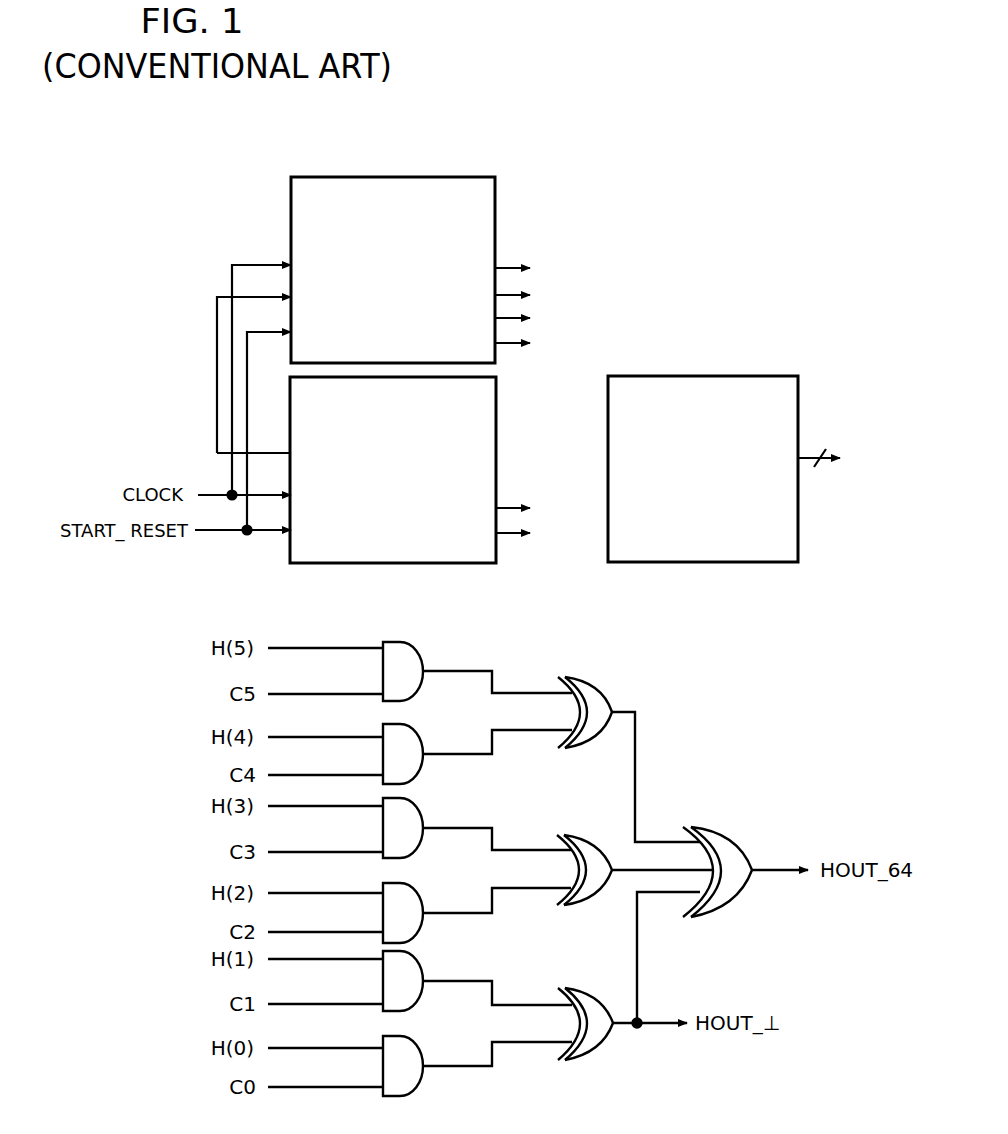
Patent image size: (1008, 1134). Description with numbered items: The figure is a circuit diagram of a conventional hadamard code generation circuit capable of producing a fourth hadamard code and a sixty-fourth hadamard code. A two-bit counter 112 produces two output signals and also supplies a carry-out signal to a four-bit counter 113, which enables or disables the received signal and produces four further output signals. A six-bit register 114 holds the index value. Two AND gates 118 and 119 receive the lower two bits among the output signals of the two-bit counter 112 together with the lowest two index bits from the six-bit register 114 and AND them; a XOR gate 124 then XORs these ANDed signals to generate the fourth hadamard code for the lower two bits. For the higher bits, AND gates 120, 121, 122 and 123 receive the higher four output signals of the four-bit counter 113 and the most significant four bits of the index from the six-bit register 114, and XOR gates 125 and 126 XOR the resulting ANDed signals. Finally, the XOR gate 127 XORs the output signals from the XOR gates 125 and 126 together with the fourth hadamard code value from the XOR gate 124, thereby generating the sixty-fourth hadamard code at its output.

The 2-bit counter 112 is at (496, 438).
The 4-bit counter 113 is at (495, 202).
The 6-bit register 114 is at (798, 402).
The AND gate 118 is at (418, 1052).
The AND gate 119 is at (418, 964).
The AND gate 120 is at (450, 892).
The AND gate 121 is at (446, 802).
The AND gate 122 is at (418, 742).
The AND gate 123 is at (408, 651).
The XOR gate 124 is at (585, 1055).
The XOR gate 125 is at (583, 902).
The XOR gate 126 is at (605, 668).
The XOR gate 127 is at (730, 838).